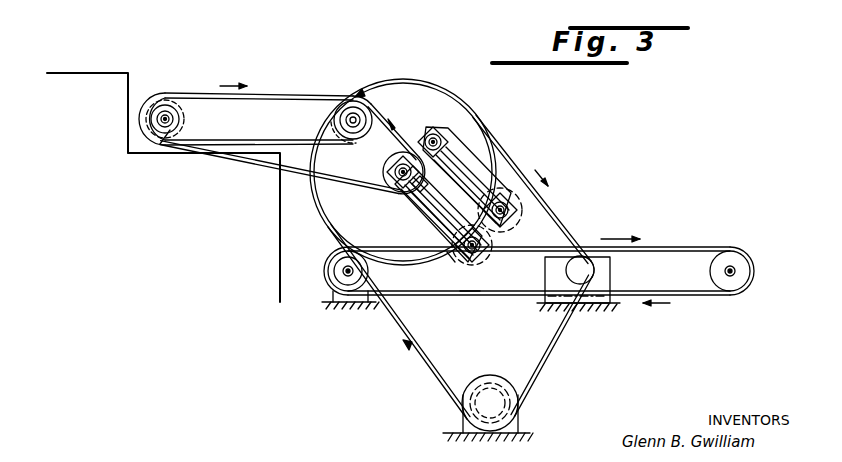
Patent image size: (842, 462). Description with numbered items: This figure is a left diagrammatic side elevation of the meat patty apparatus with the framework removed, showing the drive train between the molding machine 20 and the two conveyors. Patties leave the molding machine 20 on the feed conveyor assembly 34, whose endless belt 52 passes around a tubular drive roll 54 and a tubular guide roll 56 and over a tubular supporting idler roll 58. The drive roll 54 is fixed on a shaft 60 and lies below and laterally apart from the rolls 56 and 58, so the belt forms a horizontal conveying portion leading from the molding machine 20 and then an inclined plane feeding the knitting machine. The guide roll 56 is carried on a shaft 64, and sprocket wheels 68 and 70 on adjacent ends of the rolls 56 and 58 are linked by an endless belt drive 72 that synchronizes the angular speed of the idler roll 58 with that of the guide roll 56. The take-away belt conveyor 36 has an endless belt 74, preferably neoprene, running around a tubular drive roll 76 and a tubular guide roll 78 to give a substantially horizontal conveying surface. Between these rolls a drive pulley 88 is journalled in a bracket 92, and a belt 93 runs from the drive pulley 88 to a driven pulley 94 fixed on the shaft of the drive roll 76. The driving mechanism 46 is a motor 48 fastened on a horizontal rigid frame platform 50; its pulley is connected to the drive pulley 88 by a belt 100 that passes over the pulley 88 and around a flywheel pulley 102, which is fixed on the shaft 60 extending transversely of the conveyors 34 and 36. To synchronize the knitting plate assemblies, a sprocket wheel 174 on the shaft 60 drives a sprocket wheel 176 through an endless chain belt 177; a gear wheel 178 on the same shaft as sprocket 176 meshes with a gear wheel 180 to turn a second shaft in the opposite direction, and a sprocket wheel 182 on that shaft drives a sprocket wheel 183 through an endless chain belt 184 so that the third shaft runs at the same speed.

The molding machine 20 is at (104, 71).
The feed conveyor assembly 34 is at (282, 120).
The take-away belt conveyor 36 is at (536, 271).
The driving mechanism 46 is at (460, 333).
The motor 48 is at (520, 417).
The frame platform 50 is at (450, 426).
The endless belt 52 is at (210, 93).
The drive roll 54 is at (398, 164).
The guide roll 56 is at (165, 143).
The supporting idler roll 58 is at (347, 140).
The shaft 60 is at (392, 173).
The shaft 64 is at (166, 112).
The sprocket wheel 68 is at (150, 148).
The sprocket wheel 70 is at (357, 97).
The endless belt drive 72 is at (236, 140).
The endless belt 74 is at (688, 297).
The drive roll 76 is at (324, 258).
The guide roll 78 is at (743, 274).
The drive pulley 88 is at (582, 285).
The bracket 92 is at (612, 272).
The belt 93 is at (470, 292).
The driven pulley 94 is at (352, 302).
The belt 100 is at (510, 158).
The flywheel pulley 102 is at (462, 96).
The sprocket wheel 174 is at (398, 190).
The sprocket wheel 176 is at (480, 255).
The endless chain belt 177 is at (412, 206).
The gear wheel 178 is at (447, 257).
The gear wheel 180 is at (519, 200).
The sprocket wheel 182 is at (510, 212).
The sprocket wheel 183 is at (438, 132).
The endless chain belt 184 is at (455, 152).